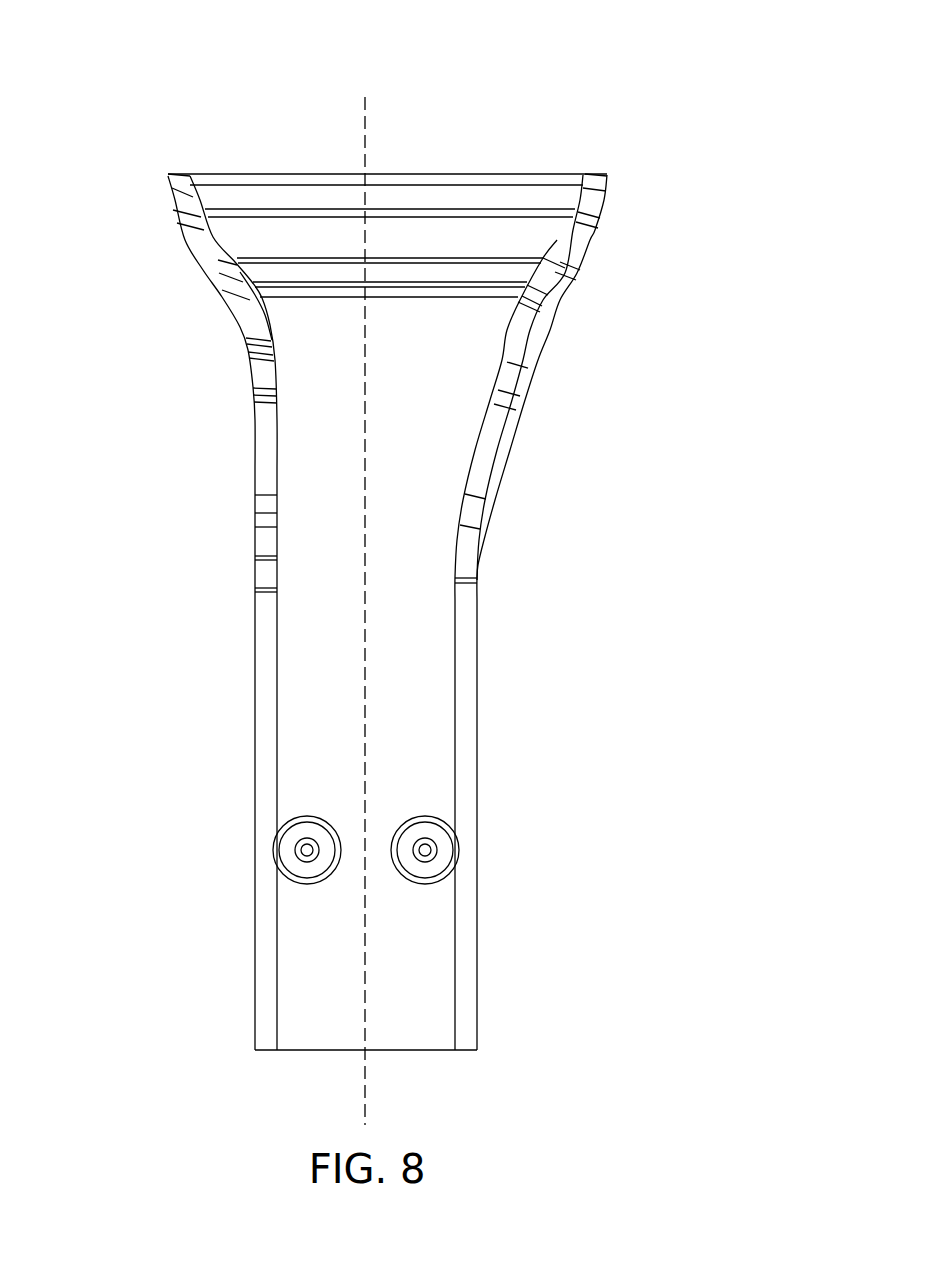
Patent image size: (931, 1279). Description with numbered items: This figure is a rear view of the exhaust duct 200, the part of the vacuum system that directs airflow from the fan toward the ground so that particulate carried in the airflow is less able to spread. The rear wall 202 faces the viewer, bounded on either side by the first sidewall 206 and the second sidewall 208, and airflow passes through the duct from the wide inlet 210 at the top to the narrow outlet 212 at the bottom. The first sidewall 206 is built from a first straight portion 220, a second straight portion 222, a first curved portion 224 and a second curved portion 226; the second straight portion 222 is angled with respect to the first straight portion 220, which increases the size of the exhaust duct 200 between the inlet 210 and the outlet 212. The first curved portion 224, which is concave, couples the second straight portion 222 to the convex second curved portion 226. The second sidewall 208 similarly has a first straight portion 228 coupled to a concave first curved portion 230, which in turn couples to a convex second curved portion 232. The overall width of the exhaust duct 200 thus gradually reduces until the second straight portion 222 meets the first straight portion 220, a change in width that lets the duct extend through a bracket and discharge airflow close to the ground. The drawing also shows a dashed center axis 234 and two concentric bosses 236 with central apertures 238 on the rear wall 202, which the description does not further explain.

The exhaust duct 200 is at (715, 262).
The rear wall 202 is at (298, 700).
The first sidewall 206 is at (580, 643).
The second sidewall 208 is at (192, 579).
The inlet 210 is at (307, 172).
The outlet 212 is at (334, 1062).
The first straight portion 220 is at (478, 750).
The second straight portion 222 is at (508, 447).
The first curved portion 224 is at (550, 325).
The second curved portion 226 is at (600, 220).
The first straight portion 228 is at (258, 497).
The first curved portion 230 is at (225, 300).
The second curved portion 232 is at (173, 215).
The central axis 234 is at (366, 137).
The boss 236 is at (305, 838).
The aperture 238 is at (275, 855).